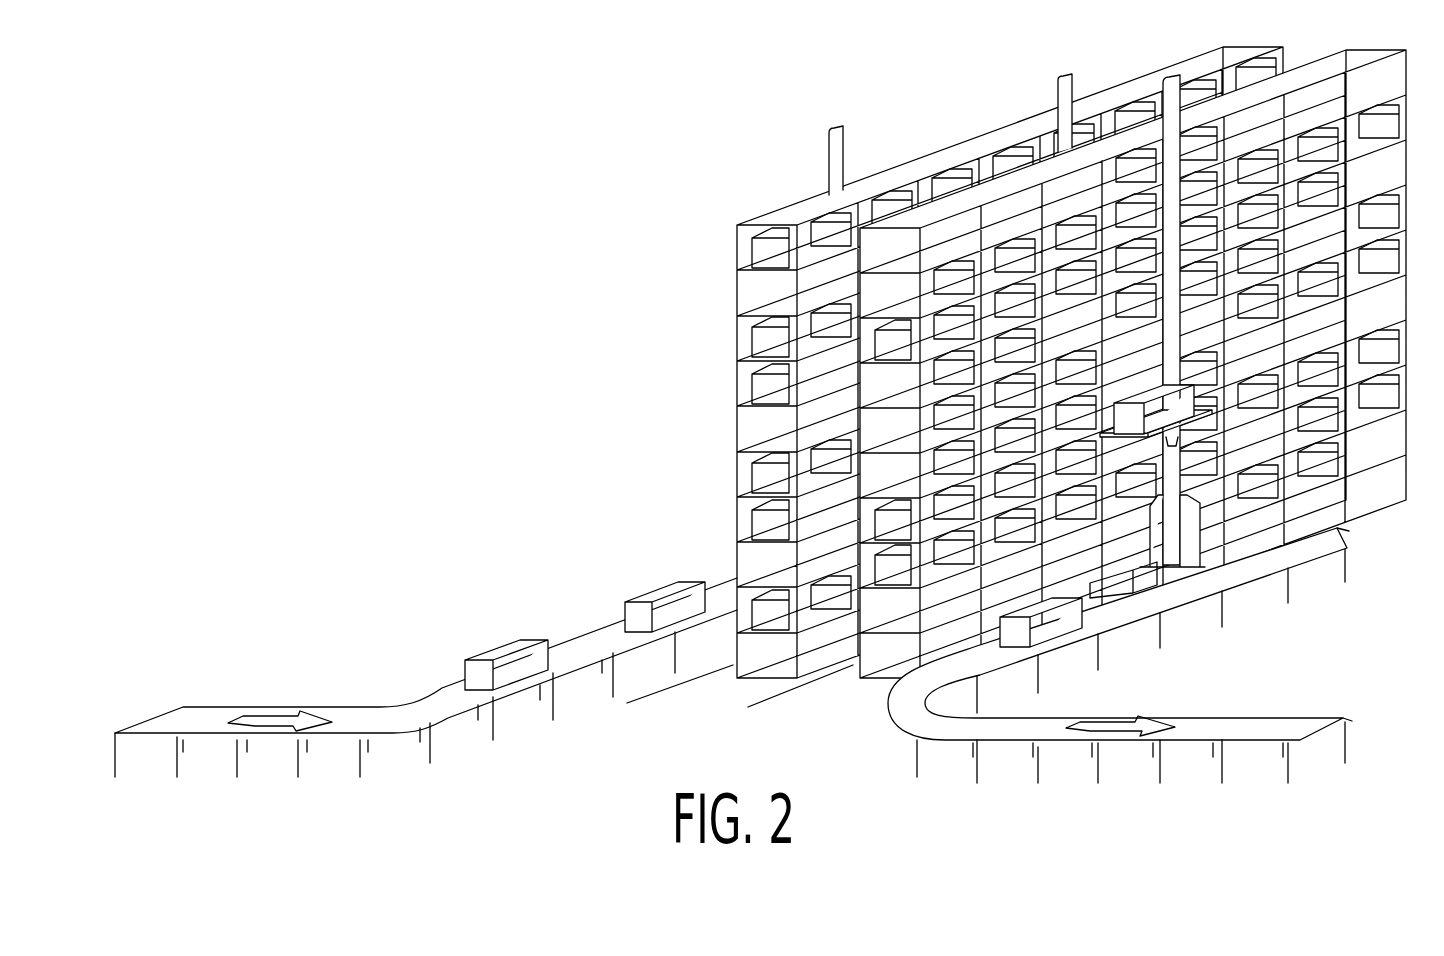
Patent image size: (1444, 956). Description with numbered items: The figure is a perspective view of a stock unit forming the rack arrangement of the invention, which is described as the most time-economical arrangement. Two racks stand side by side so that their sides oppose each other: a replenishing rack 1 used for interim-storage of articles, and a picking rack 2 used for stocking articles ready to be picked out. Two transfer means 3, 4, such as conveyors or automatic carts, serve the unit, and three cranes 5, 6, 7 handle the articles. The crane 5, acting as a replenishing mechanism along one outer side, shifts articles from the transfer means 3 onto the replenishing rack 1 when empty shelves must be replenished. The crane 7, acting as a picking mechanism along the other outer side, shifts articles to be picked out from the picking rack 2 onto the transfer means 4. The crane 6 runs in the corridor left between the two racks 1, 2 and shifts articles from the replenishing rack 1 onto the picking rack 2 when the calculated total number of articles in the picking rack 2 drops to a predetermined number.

The replenishing rack 1 is at (752, 680).
The picking rack 2 is at (866, 680).
The transfer means 3 is at (272, 708).
The transfer means 4 is at (1333, 718).
The crane 5 is at (828, 157).
The crane 6 is at (1058, 90).
The crane 7 is at (1185, 551).